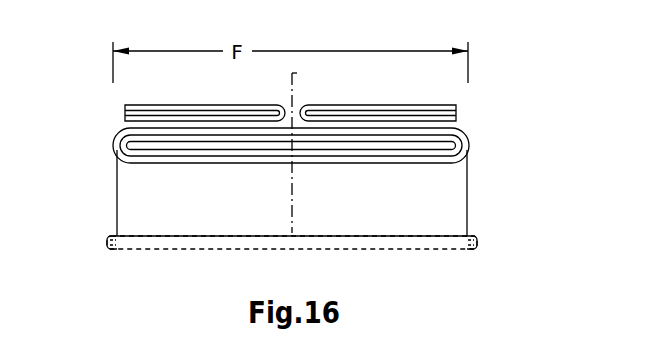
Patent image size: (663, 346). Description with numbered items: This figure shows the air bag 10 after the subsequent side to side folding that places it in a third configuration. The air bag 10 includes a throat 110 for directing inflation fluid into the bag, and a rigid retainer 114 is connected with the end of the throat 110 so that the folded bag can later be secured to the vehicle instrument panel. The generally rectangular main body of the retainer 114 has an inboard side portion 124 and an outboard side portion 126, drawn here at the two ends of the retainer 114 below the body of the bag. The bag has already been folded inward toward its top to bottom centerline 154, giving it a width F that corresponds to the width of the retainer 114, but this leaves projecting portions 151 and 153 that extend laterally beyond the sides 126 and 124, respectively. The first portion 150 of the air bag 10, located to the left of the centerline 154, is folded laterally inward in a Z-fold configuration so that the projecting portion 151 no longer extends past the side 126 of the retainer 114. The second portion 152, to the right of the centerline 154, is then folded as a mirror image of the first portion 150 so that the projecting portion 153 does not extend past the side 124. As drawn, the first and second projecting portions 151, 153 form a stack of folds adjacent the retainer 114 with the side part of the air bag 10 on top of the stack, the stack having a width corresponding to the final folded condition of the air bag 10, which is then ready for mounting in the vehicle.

The air bag 10 is at (106, 294).
The throat 110 is at (467, 182).
The retainer 114 is at (430, 240).
The inboard side portion 124 is at (478, 240).
The outboard side portion 126 is at (107, 239).
The first portion 150 is at (100, 122).
The projecting portion 151 is at (181, 103).
The second portion 152 is at (487, 118).
The projecting portion 153 is at (422, 104).
The top to bottom centerline 154 is at (293, 80).